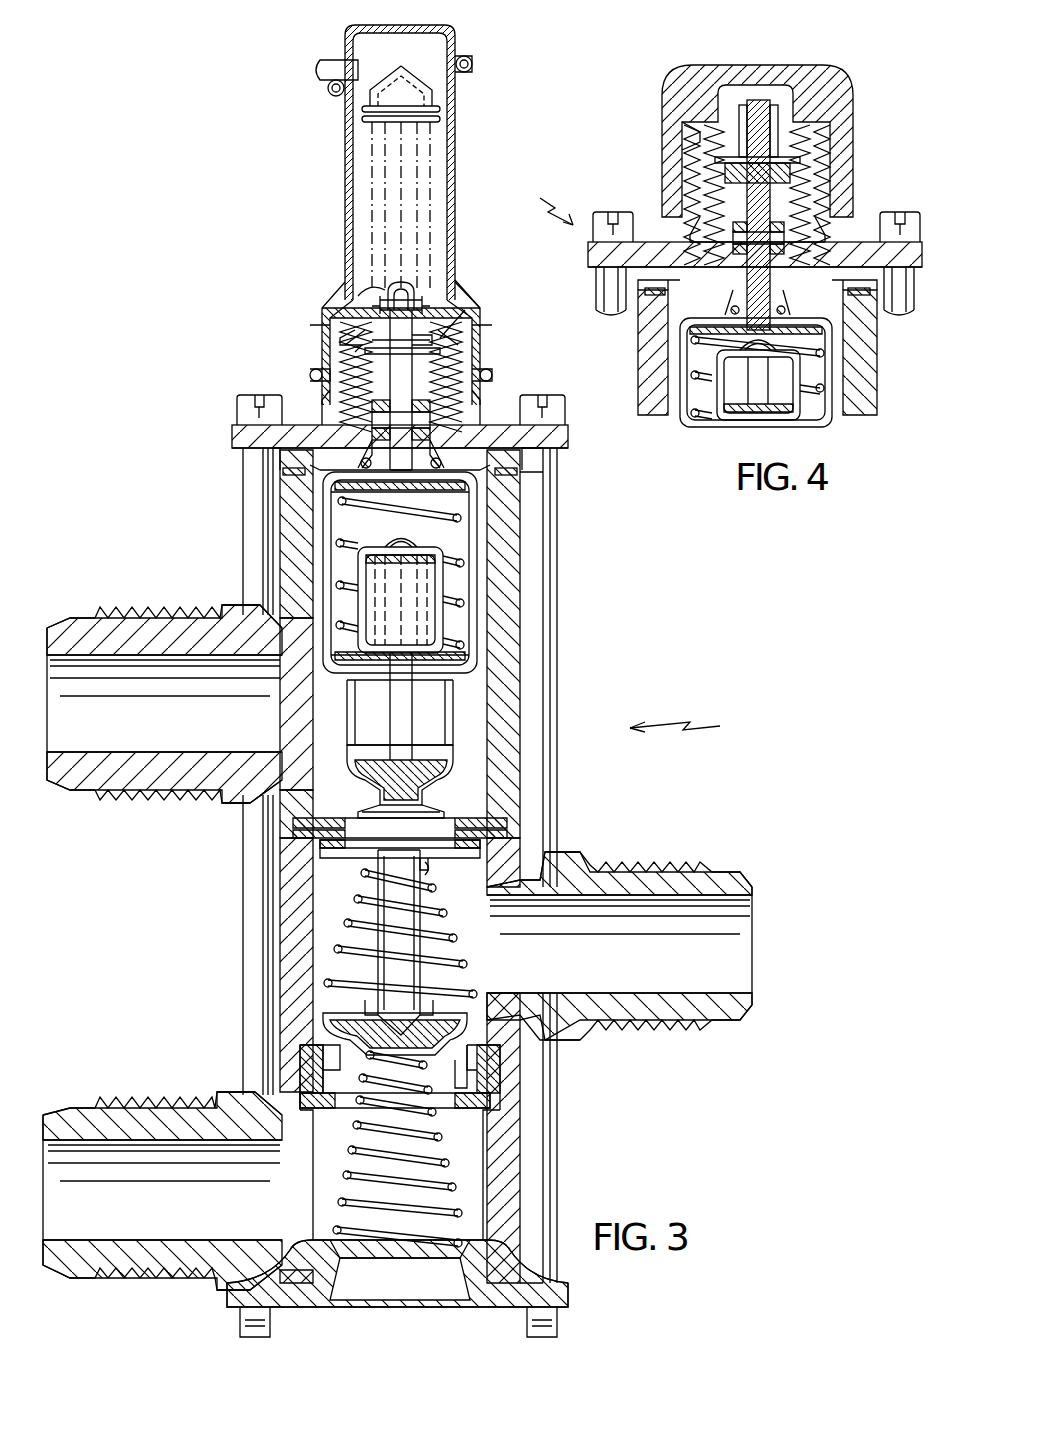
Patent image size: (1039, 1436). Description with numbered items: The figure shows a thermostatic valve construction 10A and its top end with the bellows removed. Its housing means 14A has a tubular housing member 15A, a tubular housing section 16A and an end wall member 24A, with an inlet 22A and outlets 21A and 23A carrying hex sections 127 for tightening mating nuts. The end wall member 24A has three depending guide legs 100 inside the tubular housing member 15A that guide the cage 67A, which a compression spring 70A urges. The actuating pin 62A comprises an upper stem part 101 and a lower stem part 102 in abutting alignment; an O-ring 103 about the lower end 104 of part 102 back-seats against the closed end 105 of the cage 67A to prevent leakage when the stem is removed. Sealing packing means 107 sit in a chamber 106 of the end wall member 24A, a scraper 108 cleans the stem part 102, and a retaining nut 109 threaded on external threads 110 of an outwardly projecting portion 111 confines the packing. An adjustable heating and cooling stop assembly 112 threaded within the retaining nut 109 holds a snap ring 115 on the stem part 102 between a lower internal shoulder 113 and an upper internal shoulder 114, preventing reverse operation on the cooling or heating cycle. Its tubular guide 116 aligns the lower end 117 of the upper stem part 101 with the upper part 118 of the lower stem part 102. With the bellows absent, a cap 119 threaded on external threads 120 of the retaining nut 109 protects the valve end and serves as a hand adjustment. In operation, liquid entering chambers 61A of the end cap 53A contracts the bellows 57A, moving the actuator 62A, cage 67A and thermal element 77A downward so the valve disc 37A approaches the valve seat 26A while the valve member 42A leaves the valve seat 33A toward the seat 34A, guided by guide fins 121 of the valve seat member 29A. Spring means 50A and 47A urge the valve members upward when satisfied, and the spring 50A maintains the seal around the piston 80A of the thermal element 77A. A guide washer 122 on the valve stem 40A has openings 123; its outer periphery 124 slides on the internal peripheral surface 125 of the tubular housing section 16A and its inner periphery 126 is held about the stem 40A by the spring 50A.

In FIG. 3, the valve construction 10A is at (694, 726).
In FIG. 4, the valve construction 10A is at (540, 204).
In FIG. 3, the housing means 14A is at (525, 593).
In FIG. 3, the tubular housing member 15A is at (510, 665).
In FIG. 3, the tubular housing section 16A is at (280, 992).
In FIG. 3, the outlet fitting 21A is at (150, 618).
In FIG. 3, the inlet 22A is at (720, 880).
In FIG. 3, the outlet fitting 23A is at (150, 1108).
In FIG. 3, the end wall member 24A is at (232, 438).
In FIG. 3, the valve seat 26A is at (430, 810).
In FIG. 3, the valve seat member 29A is at (330, 1060).
In FIG. 3, the valve seat 33A is at (485, 1000).
In FIG. 3, the valve seat 34A is at (460, 1112).
In FIG. 3, the valve member 37A is at (440, 785).
In FIG. 3, the valve stem 40A is at (383, 912).
In FIG. 3, the valve member 42A is at (335, 1020).
In FIG. 3, the spring means 47A is at (465, 1180).
In FIG. 3, the compression spring 50A is at (330, 960).
In FIG. 3, the end cap 53A is at (345, 140).
In FIG. 3, the bellows 57A is at (365, 110).
In FIG. 3, the chambers 61A is at (425, 55).
In FIG. 3, the actuating pin 62A is at (440, 338).
In FIG. 3, the cage 67A is at (323, 575).
In FIG. 4, the cage 67A is at (680, 420).
In FIG. 3, the compression spring 70A is at (443, 560).
In FIG. 4, the compression spring 70A is at (800, 405).
In FIG. 3, the thermal element 77A is at (412, 665).
In FIG. 3, the piston 80A is at (417, 540).
In FIG. 3, the guide legs 100 is at (323, 522).
In FIG. 3, the upper stem part 101 is at (350, 192).
In FIG. 3, the lower stem part 102 is at (390, 325).
In FIG. 4, the lower stem part 102 is at (747, 190).
In FIG. 3, the O-ring 103 is at (372, 450).
In FIG. 4, the O-ring 103 is at (735, 306).
In FIG. 3, the lower end 104 is at (430, 450).
In FIG. 4, the lower end 104 is at (790, 300).
In FIG. 3, the closed end 105 is at (495, 460).
In FIG. 4, the closed end 105 is at (810, 337).
In FIG. 3, the chamber 106 is at (430, 432).
In FIG. 4, the chamber 106 is at (784, 248).
In FIG. 3, the sealing packing means 107 is at (372, 440).
In FIG. 4, the sealing packing means 107 is at (733, 248).
In FIG. 3, the scraper 108 is at (378, 476).
In FIG. 4, the scraper 108 is at (680, 280).
In FIG. 3, the retaining nut 109 is at (460, 360).
In FIG. 4, the retaining nut 109 is at (825, 165).
In FIG. 3, the external threads 110 is at (568, 435).
In FIG. 3, the outwardly projecting portion 111 is at (430, 405).
In FIG. 4, the outwardly projecting portion 111 is at (784, 225).
In FIG. 3, the adjustable heating and cooling stop assembly 112 is at (345, 345).
In FIG. 3, the lower internal shoulder 113 is at (435, 340).
In FIG. 3, the upper internal shoulder 114 is at (375, 350).
In FIG. 3, the snap ring 115 is at (348, 345).
In FIG. 4, the snap ring 115 is at (700, 175).
In FIG. 3, the tubular guide 116 is at (380, 302).
In FIG. 4, the tubular guide 116 is at (778, 125).
In FIG. 3, the lower end 117 is at (395, 292).
In FIG. 3, the upper part 118 is at (450, 300).
In FIG. 4, the cap 119 is at (700, 70).
In FIG. 4, the external threads 120 is at (725, 165).
In FIG. 3, the guide fins 121 is at (480, 1072).
In FIG. 3, the guide washer 122 is at (507, 832).
In FIG. 3, the openings 123 is at (330, 855).
In FIG. 3, the outer periphery 124 is at (330, 844).
In FIG. 3, the internal peripheral surface 125 is at (320, 938).
In FIG. 3, the inner periphery 126 is at (430, 870).
In FIG. 3, the hex sections 127 is at (235, 805).